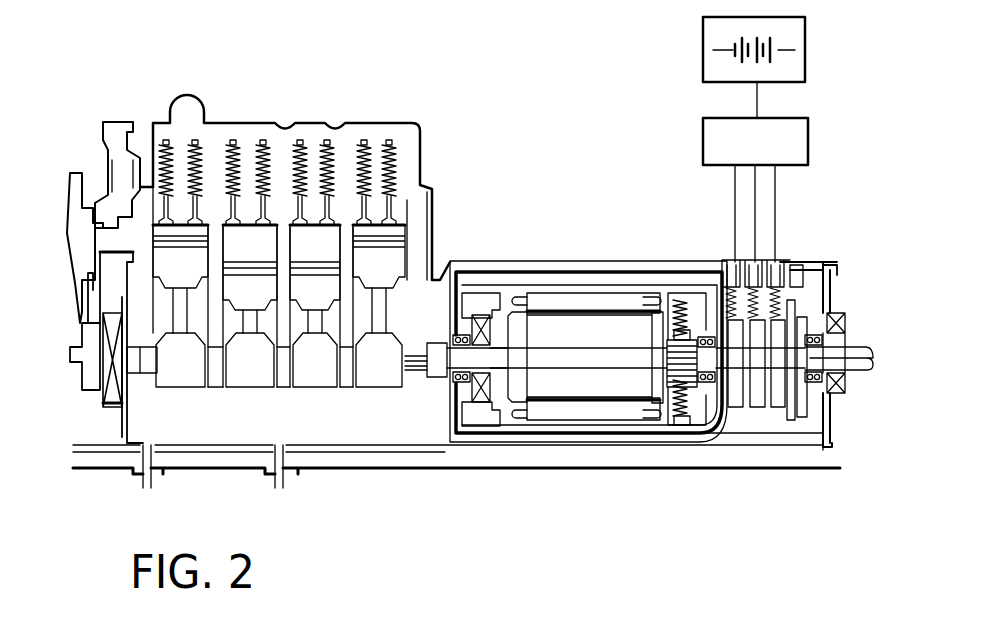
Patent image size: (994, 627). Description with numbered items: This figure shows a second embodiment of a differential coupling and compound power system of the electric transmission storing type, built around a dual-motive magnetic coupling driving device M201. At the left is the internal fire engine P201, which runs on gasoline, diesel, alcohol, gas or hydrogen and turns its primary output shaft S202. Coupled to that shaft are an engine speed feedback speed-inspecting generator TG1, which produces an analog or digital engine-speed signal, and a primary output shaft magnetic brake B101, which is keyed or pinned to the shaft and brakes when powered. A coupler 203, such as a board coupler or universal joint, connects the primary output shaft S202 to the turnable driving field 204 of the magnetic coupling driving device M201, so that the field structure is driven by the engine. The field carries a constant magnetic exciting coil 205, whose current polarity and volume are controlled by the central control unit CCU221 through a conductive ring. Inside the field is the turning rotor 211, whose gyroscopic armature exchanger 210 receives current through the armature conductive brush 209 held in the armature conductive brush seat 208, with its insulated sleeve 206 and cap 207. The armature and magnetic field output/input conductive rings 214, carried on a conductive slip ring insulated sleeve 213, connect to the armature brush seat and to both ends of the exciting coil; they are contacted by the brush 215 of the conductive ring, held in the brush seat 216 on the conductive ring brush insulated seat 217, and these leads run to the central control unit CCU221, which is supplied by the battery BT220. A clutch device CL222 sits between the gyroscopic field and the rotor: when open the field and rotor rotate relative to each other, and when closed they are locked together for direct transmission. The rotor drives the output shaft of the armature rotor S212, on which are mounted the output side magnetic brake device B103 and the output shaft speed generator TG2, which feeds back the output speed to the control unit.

The internal fire engine P201 is at (422, 167).
The engine speed feedback speed-inspecting generator TG1 is at (84, 343).
The internal fire engine primary output shaft magnetic brake B101 is at (117, 405).
The primary output shaft of internal combustion engine S202 is at (413, 364).
The coupler 203 is at (440, 375).
The magnetic coupling driving device M201 is at (589, 286).
The clutch device CL222 is at (472, 407).
The constant magnetic exciting coil 205 is at (518, 294).
The turnable driving field 204 is at (568, 300).
The insulated sleeve of armature conductive brush seat 206 is at (644, 418).
The turning rotor 211 is at (564, 388).
The gyroscopic armature exchanger 210 is at (673, 356).
The cap of armature conductive brush seat 207 is at (679, 423).
The armature conductive brush seat 208 is at (710, 384).
The armature conductive brush 209 is at (728, 400).
The armature and magnetic field output/input conductive ring 214 is at (754, 392).
The conductive slip ring insulated sleeve 213 is at (795, 420).
The brush seat of conductive ring 216 is at (779, 262).
The conductive ring brush insulated seat 217 is at (800, 284).
The brush of conductive ring 215 is at (831, 288).
The output shaft speed generator TG2 is at (801, 410).
The output side magnetic brake device B103 is at (845, 330).
The output shaft of armature rotor S212 is at (866, 352).
The battery BT220 is at (703, 68).
The central control unit CCU221 is at (755, 141).